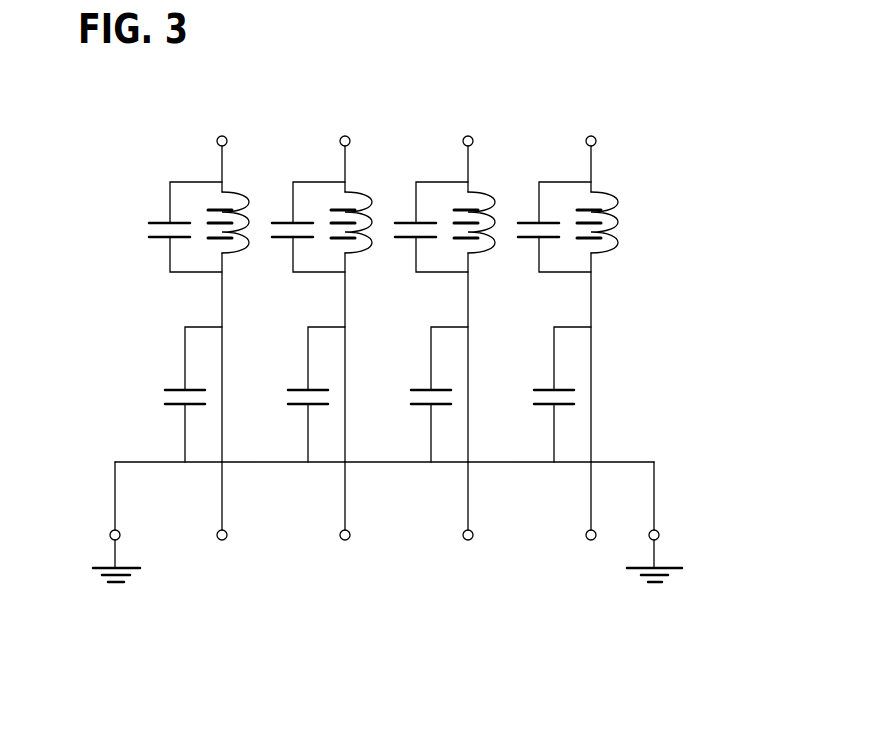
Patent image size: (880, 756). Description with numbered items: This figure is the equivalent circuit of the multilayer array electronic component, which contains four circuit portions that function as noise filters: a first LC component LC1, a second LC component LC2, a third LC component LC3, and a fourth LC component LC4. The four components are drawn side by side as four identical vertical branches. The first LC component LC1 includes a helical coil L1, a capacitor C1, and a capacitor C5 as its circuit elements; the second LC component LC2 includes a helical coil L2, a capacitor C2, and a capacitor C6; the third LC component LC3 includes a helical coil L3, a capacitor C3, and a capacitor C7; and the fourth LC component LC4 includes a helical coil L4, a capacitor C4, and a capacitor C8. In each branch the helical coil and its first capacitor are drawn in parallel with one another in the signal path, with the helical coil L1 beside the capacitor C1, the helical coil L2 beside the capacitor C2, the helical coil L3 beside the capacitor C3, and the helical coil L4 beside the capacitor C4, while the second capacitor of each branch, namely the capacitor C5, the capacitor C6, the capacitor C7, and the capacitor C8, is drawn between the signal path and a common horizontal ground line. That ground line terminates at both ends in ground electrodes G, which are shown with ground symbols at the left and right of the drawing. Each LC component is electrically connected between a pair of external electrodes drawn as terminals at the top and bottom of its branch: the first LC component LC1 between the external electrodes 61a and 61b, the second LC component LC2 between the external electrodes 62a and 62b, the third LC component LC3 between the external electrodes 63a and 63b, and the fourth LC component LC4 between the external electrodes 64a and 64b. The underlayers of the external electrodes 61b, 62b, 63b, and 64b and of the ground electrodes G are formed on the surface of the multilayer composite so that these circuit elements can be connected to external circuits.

The external electrode 61a is at (225, 136).
The external electrode 62a is at (348, 136).
The external electrode 63a is at (471, 136).
The external electrode 64a is at (594, 136).
The external electrode 61b is at (224, 541).
The external electrode 62b is at (347, 541).
The external electrode 63b is at (470, 541).
The external electrode 64b is at (593, 541).
The capacitor C1 is at (162, 220).
The capacitor C2 is at (285, 220).
The capacitor C3 is at (408, 220).
The capacitor C4 is at (531, 220).
The capacitor C5 is at (167, 395).
The capacitor C6 is at (298, 392).
The capacitor C7 is at (421, 392).
The capacitor C8 is at (544, 392).
The helical coil L1 is at (233, 257).
The helical coil L2 is at (356, 257).
The helical coil L3 is at (479, 257).
The helical coil L4 is at (602, 257).
The first LC component LC1 is at (233, 630).
The second LC component LC2 is at (356, 630).
The third LC component LC3 is at (479, 630).
The fourth LC component LC4 is at (602, 630).
The ground electrode G is at (115, 560).